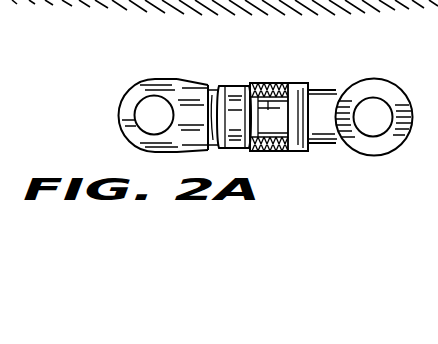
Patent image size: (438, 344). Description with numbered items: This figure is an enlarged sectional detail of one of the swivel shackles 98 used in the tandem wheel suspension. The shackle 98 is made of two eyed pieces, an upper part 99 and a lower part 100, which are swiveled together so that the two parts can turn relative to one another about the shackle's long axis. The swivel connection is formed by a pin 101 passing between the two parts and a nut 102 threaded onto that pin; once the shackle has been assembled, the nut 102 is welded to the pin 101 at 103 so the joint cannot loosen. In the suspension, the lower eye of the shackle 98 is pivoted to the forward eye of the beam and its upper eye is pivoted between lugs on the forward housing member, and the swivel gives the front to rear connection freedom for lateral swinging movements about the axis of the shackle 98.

The swivel shackle 98 is at (304, 79).
The upper part 99 is at (177, 83).
The lower part 100 is at (335, 90).
The pin 101 is at (281, 84).
The nut 102 is at (236, 83).
The weld 103 is at (221, 140).